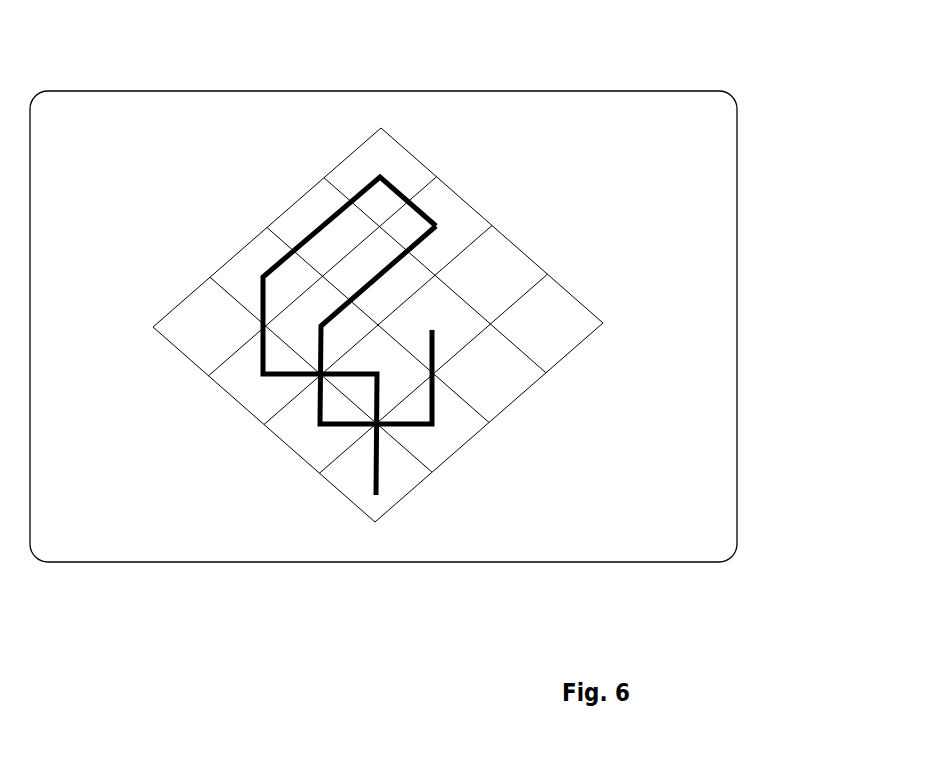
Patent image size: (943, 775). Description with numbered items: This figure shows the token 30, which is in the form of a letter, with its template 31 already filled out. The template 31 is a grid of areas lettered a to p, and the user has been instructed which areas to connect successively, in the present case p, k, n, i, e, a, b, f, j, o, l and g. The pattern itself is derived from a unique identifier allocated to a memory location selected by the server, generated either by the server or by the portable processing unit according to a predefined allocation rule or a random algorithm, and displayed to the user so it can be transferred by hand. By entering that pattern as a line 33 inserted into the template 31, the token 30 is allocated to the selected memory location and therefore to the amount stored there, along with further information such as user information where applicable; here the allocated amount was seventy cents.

The token 30 is at (703, 218).
The template 31 is at (383, 128).
The line 33 is at (280, 258).